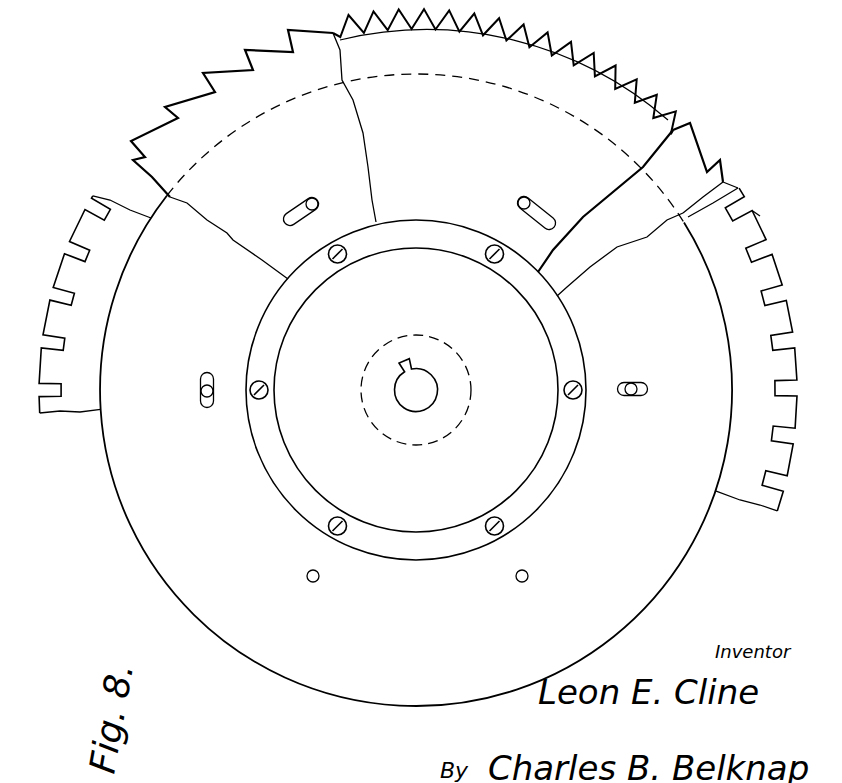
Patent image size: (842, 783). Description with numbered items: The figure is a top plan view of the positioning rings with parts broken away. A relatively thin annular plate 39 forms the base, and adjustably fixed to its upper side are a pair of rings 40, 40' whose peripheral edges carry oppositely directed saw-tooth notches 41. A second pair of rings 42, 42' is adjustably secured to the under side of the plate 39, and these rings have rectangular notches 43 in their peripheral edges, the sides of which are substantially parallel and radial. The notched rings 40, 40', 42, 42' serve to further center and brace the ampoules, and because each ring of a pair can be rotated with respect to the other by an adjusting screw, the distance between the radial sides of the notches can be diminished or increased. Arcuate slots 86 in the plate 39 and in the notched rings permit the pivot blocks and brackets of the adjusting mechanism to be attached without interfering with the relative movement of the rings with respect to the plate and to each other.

The annular plate 39 is at (112, 470).
The ring 40 is at (346, 127).
The ring 40' is at (229, 245).
The saw-tooth notches 41 is at (592, 62).
The ring 42 is at (744, 173).
The ring 42' is at (773, 196).
The rectangular notches 43 is at (793, 293).
The arcuate slots 86 is at (300, 200).